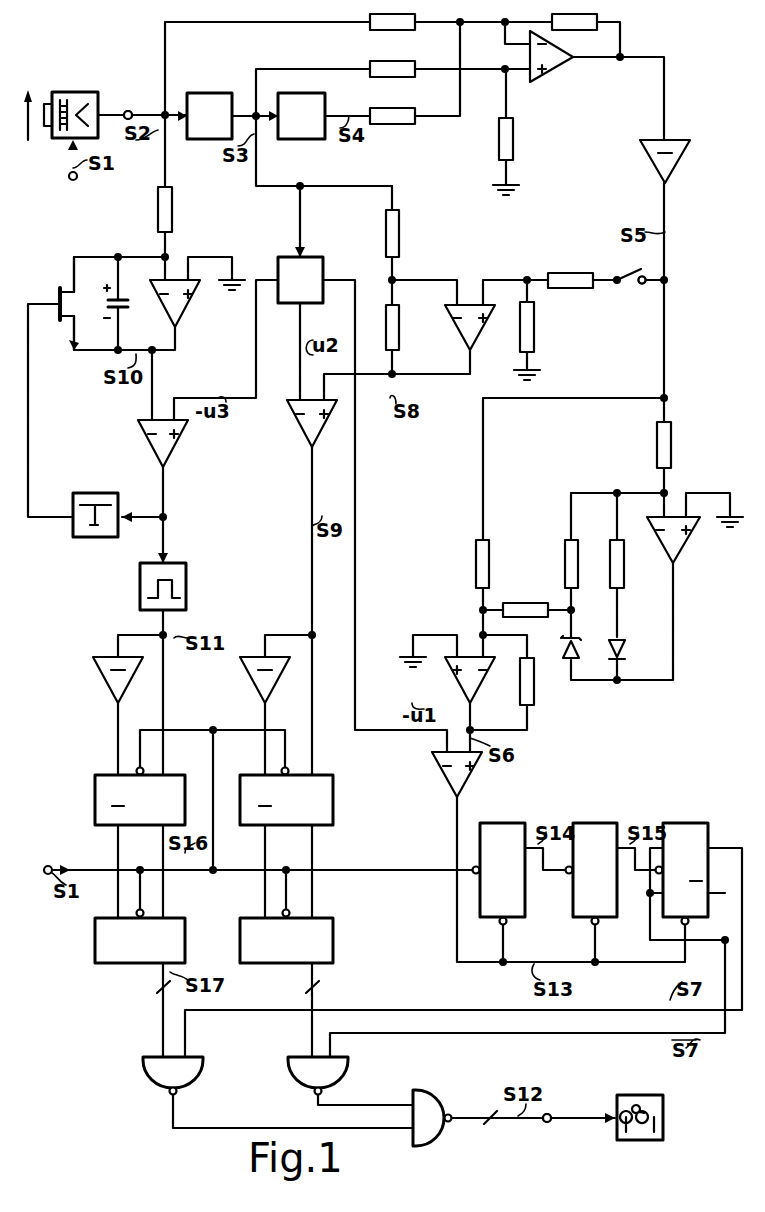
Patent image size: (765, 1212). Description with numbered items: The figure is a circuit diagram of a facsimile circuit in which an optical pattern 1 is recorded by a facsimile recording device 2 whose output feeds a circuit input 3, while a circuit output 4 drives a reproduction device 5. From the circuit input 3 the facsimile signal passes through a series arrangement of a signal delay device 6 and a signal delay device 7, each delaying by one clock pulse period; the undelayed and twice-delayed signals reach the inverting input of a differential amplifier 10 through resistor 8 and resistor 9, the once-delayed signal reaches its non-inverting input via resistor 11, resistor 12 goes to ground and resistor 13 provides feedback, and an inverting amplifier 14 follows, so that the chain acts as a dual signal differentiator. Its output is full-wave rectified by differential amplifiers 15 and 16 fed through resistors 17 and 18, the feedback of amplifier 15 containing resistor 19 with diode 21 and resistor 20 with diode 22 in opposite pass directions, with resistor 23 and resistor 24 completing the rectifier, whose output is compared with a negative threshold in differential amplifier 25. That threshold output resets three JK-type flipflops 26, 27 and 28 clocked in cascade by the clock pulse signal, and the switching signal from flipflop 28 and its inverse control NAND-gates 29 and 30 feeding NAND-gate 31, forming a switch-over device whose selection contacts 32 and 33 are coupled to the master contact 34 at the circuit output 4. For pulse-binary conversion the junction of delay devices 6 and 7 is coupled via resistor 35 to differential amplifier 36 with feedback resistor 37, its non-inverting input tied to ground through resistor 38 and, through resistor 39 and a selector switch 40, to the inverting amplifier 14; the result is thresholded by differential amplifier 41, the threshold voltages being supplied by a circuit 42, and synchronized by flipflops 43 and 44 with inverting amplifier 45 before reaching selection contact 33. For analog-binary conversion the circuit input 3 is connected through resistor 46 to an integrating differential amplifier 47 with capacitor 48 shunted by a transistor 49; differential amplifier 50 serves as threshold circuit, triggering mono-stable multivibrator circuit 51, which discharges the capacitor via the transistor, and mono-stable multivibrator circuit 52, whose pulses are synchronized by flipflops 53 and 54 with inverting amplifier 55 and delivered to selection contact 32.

The optical pattern 1 is at (28, 98).
The facsimile recording device 2 is at (78, 94).
The circuit input 3 is at (128, 111).
The circuit output 4 is at (548, 1122).
The reproduction device 5 is at (664, 1130).
The signal delay device 6 is at (190, 94).
The signal delay device 7 is at (280, 94).
The resistor 8 is at (406, 28).
The resistor 9 is at (408, 120).
The differential amplifier 10 is at (548, 72).
The resistor 11 is at (406, 72).
The resistor 12 is at (508, 124).
The resistor 13 is at (578, 26).
The inverting amplifier 14 is at (645, 152).
The differential amplifier 15 is at (688, 544).
The differential amplifier 16 is at (478, 685).
The resistor 17 is at (660, 452).
The resistor 18 is at (476, 576).
The resistor 19 is at (622, 568).
The resistor 20 is at (571, 564).
The diode 21 is at (624, 650).
The diode 22 is at (566, 652).
The resistor 23 is at (510, 609).
The resistor 24 is at (530, 688).
The differential amplifier 25 is at (476, 774).
The flipflop 26 is at (488, 822).
The flipflop 27 is at (580, 822).
The flipflop 28 is at (670, 822).
The NAND-gate 29 is at (158, 1084).
The NAND-gate 30 is at (302, 1084).
The NAND-gate 31 is at (442, 1130).
The selection contact 32 is at (158, 988).
The selection contact 33 is at (306, 988).
The master contact 34 is at (488, 1122).
The resistor 35 is at (392, 244).
The differential amplifier 36 is at (474, 332).
The resistor 37 is at (392, 338).
The resistor 38 is at (532, 338).
The resistor 39 is at (578, 284).
The selector switch 40 is at (638, 284).
The differential amplifier 41 is at (316, 432).
The circuit 42 is at (322, 262).
The flipflop 43 is at (333, 803).
The flipflop 44 is at (333, 942).
The inverting amplifier 45 is at (276, 683).
The resistor 46 is at (166, 222).
The differential amplifier 47 is at (188, 308).
The capacitor 48 is at (126, 304).
The transistor 49 is at (68, 307).
The differential amplifier 50 is at (174, 443).
The mono-stable multivibrator circuit 51 is at (100, 502).
The mono-stable multivibrator circuit 52 is at (186, 592).
The flipflop 53 is at (95, 806).
The flipflop 54 is at (95, 930).
The inverting amplifier 55 is at (128, 683).